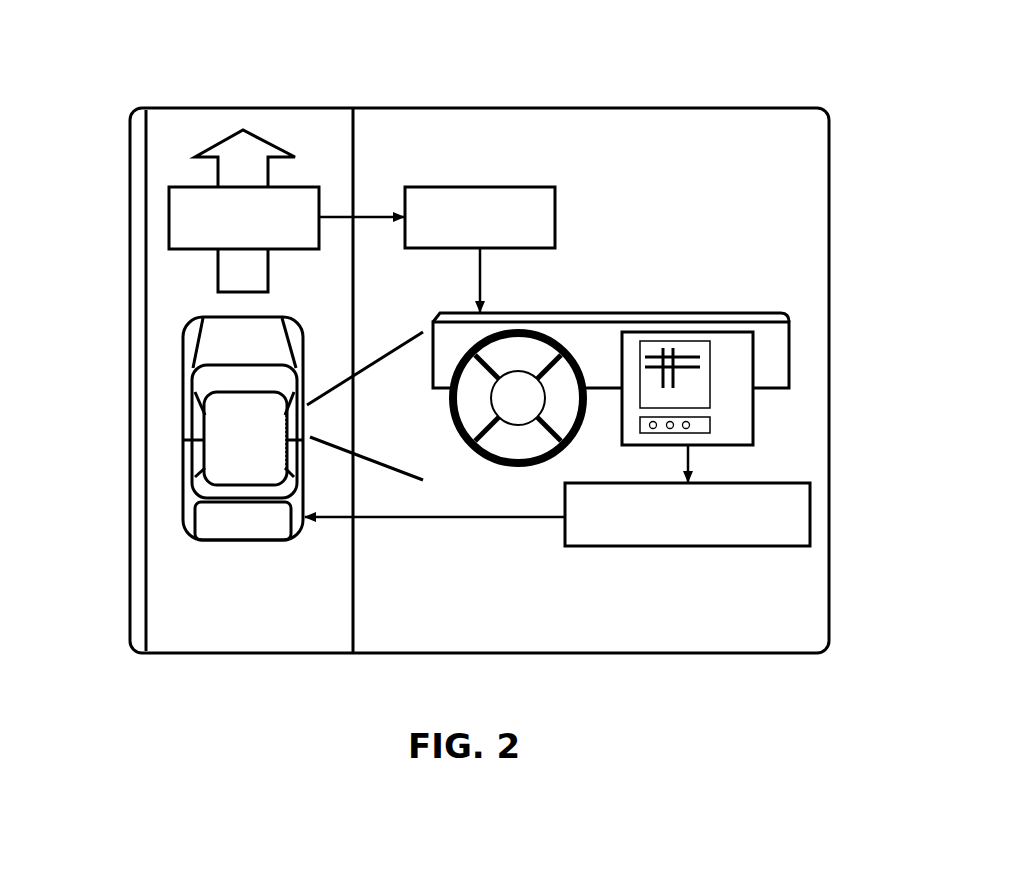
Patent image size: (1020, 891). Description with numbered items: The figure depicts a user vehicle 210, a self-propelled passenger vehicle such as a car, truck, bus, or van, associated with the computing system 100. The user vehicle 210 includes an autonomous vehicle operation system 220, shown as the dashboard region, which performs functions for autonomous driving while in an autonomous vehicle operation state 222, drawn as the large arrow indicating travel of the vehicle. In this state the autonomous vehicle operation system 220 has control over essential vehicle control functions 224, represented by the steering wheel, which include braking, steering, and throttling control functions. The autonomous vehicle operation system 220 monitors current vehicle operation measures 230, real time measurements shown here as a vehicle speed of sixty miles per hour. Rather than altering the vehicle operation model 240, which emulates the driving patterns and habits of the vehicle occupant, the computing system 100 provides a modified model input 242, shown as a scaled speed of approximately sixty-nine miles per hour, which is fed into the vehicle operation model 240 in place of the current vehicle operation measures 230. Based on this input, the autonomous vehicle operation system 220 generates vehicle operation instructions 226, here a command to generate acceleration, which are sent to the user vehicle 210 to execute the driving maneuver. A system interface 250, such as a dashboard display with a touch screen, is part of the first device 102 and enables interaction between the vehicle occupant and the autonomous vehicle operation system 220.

The computing system 100 is at (142, 58).
The first device 102 is at (735, 326).
The user vehicle 210 is at (183, 443).
The autonomous vehicle operation system 220 is at (570, 314).
The autonomous vehicle operation state 222 is at (283, 150).
The essential vehicle control functions 224 is at (582, 354).
The vehicle operation instructions 226 is at (795, 547).
The current vehicle operation measures 230 is at (200, 186).
The vehicle operation model 240 is at (692, 452).
The modified model input 242 is at (538, 187).
The system interface 250 is at (728, 393).